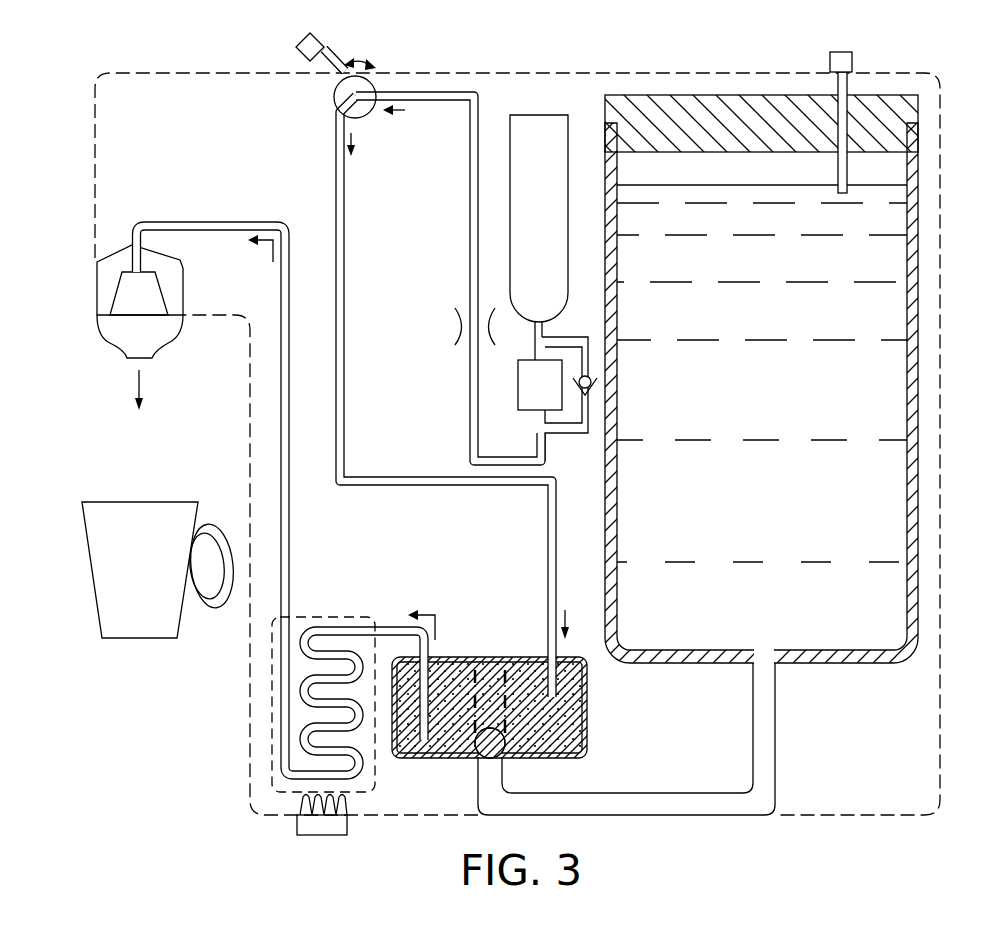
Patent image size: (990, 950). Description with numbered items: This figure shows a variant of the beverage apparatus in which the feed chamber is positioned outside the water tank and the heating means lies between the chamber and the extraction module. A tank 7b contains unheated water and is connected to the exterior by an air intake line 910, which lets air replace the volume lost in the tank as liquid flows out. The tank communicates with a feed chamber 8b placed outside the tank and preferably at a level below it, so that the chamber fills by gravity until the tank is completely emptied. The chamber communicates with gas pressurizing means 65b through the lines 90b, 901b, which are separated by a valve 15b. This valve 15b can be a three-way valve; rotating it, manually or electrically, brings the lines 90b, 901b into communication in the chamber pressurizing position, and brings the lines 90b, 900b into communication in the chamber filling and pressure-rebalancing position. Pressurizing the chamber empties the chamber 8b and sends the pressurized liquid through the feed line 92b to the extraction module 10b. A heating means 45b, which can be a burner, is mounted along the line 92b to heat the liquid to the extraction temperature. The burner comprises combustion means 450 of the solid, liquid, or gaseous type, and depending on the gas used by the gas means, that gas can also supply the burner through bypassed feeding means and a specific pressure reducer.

The tank 7b is at (927, 483).
The air intake line 910 is at (846, 95).
The feed chamber 8b is at (588, 705).
The gas pressurizing means 65b is at (540, 98).
The extraction module 10b is at (102, 353).
The line 90b is at (344, 258).
The line 901b is at (450, 92).
The valve 15b is at (370, 117).
The line 900b is at (338, 76).
The feed line 92b is at (291, 534).
The heating means 45b is at (268, 722).
The combustion means 450 is at (322, 838).